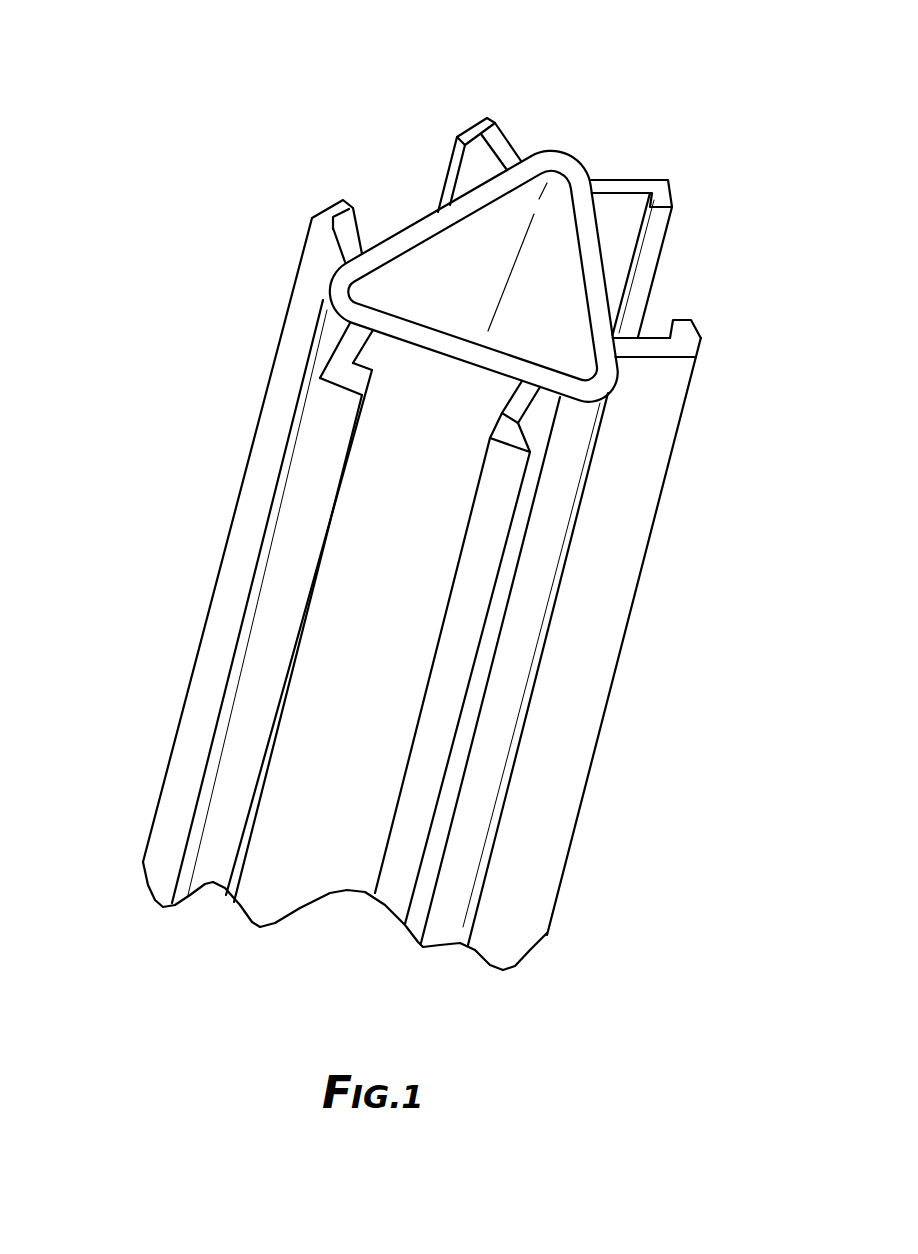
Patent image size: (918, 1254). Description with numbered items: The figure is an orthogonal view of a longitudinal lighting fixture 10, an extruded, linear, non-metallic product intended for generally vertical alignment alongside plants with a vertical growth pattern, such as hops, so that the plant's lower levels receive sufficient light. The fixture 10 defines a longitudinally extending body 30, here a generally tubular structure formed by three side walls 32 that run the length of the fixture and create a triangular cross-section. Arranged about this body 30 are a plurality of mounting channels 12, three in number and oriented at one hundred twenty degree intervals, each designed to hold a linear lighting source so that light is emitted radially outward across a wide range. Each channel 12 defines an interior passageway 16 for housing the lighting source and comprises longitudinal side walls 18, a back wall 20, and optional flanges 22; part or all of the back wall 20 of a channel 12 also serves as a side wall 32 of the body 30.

The lighting fixture 10 is at (126, 189).
The mounting channel 12 is at (306, 254).
The interior passageway 16 is at (368, 214).
The longitudinal side wall 18 is at (635, 440).
The back wall 20 is at (630, 260).
The flange 22 is at (463, 138).
The body 30 is at (323, 333).
The side wall 32 is at (422, 222).